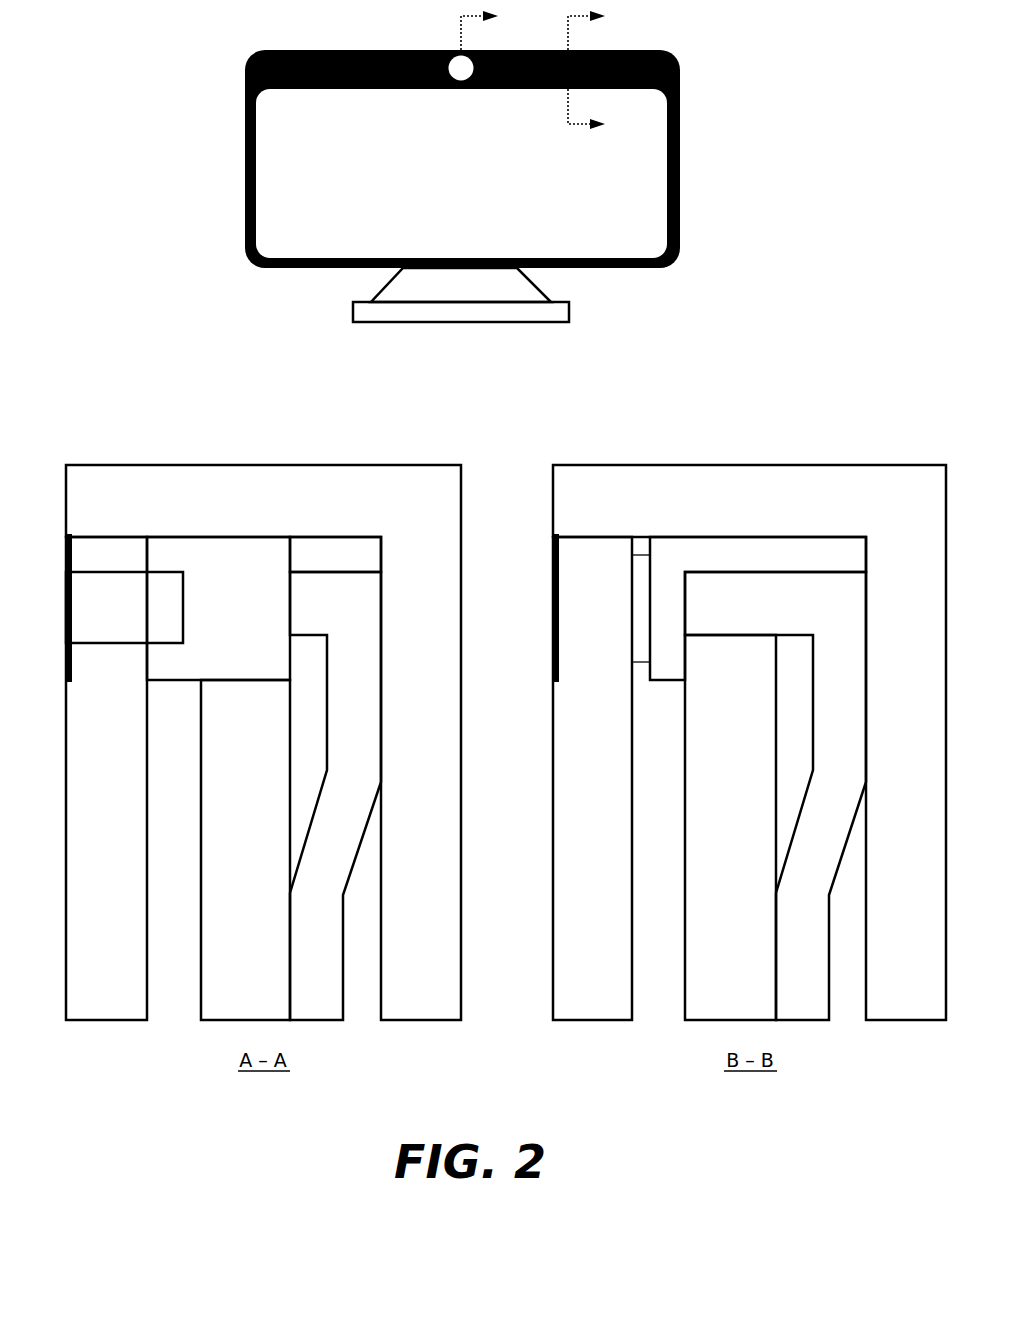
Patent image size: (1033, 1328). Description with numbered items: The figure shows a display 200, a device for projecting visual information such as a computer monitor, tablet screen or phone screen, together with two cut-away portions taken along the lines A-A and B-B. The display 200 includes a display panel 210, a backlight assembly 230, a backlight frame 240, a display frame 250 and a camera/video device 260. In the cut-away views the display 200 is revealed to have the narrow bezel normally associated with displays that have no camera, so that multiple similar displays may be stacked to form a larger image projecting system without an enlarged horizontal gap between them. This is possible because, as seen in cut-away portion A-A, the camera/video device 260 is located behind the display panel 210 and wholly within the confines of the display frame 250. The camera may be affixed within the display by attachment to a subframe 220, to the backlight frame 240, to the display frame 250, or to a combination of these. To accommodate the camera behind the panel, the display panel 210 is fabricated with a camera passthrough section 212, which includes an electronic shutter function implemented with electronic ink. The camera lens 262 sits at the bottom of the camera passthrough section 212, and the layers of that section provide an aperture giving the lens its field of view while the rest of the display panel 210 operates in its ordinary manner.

The display 200 is at (295, 50).
The display panel 210 is at (609, 909).
The camera passthrough section 212 is at (124, 607).
The subframe 220 is at (320, 565).
The backlight assembly 230 is at (749, 900).
The backlight frame 240 is at (792, 626).
The display frame 250 is at (922, 909).
The camera/video device 260 is at (438, 50).
The camera lens 262 is at (183, 587).